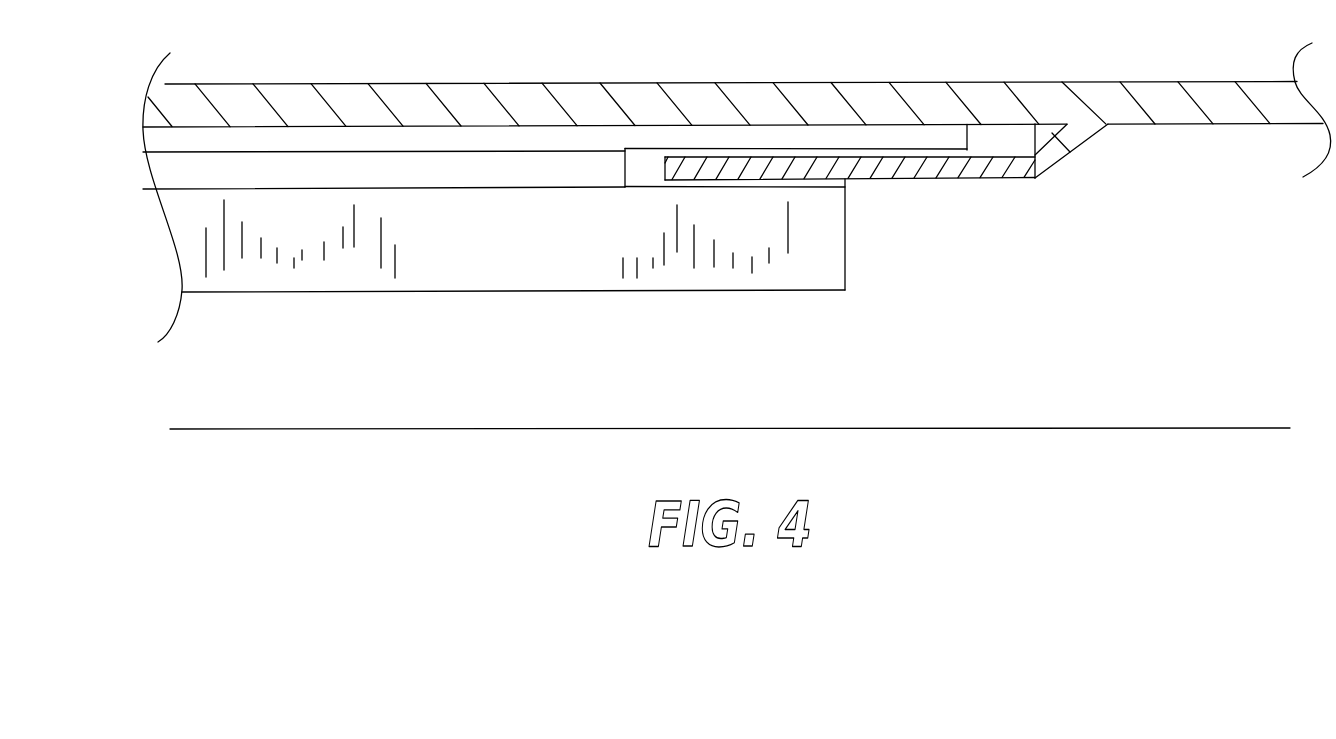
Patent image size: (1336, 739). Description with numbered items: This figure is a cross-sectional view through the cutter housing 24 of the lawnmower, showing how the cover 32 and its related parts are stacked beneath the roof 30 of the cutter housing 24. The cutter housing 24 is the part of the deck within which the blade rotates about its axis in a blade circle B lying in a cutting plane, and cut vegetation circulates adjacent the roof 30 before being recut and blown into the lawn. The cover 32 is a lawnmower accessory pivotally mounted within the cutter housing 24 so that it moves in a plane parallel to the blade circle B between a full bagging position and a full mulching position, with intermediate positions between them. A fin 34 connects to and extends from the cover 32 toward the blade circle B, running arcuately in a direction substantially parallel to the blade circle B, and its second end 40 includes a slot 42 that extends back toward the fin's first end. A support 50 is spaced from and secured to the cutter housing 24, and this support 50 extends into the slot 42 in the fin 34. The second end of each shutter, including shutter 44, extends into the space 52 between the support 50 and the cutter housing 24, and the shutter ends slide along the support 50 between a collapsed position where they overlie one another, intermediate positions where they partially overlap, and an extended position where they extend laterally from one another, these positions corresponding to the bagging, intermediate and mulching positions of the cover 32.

The cutter housing 24 is at (396, 98).
The roof 30 is at (1163, 126).
The cover 32 is at (363, 331).
The fin 34 is at (532, 272).
The second end 40 is at (827, 255).
The slot 42 is at (645, 175).
The shutter 44 is at (157, 137).
The support 50 is at (918, 168).
The space 52 is at (997, 138).
The blade circle B is at (912, 430).